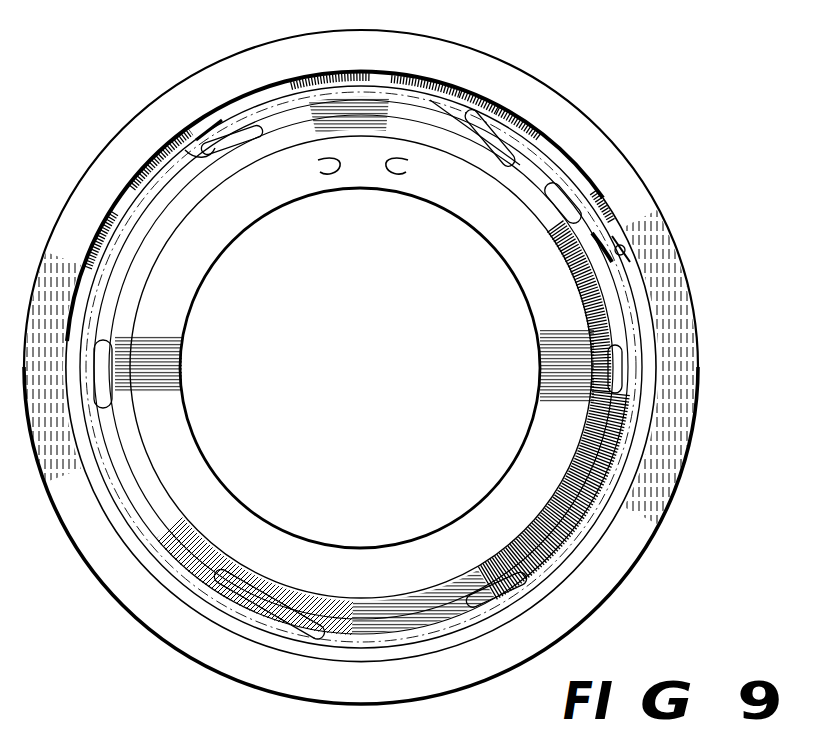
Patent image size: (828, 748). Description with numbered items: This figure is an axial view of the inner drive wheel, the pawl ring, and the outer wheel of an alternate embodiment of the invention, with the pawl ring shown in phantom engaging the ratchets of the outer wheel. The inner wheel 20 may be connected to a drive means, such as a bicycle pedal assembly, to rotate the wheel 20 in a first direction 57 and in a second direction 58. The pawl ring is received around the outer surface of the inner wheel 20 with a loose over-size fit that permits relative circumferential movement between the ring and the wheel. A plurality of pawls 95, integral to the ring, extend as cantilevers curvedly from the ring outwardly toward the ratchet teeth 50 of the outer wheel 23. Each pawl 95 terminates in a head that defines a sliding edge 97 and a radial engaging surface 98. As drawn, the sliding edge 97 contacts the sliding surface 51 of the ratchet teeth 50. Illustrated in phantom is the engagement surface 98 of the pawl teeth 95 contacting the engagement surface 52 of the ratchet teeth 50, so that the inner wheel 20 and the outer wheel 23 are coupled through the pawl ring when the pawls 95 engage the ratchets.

The outer wheel 23 is at (99, 170).
The inner wheel 20 is at (212, 264).
The ratchet teeth 50 is at (495, 94).
The sliding surface 51 is at (624, 250).
The engagement surface 52 is at (608, 210).
The first direction 57 is at (404, 164).
The second direction 58 is at (320, 164).
The pawls 95 is at (241, 96).
The sliding edge 97 is at (197, 135).
The radial engaging surface 98 is at (165, 150).